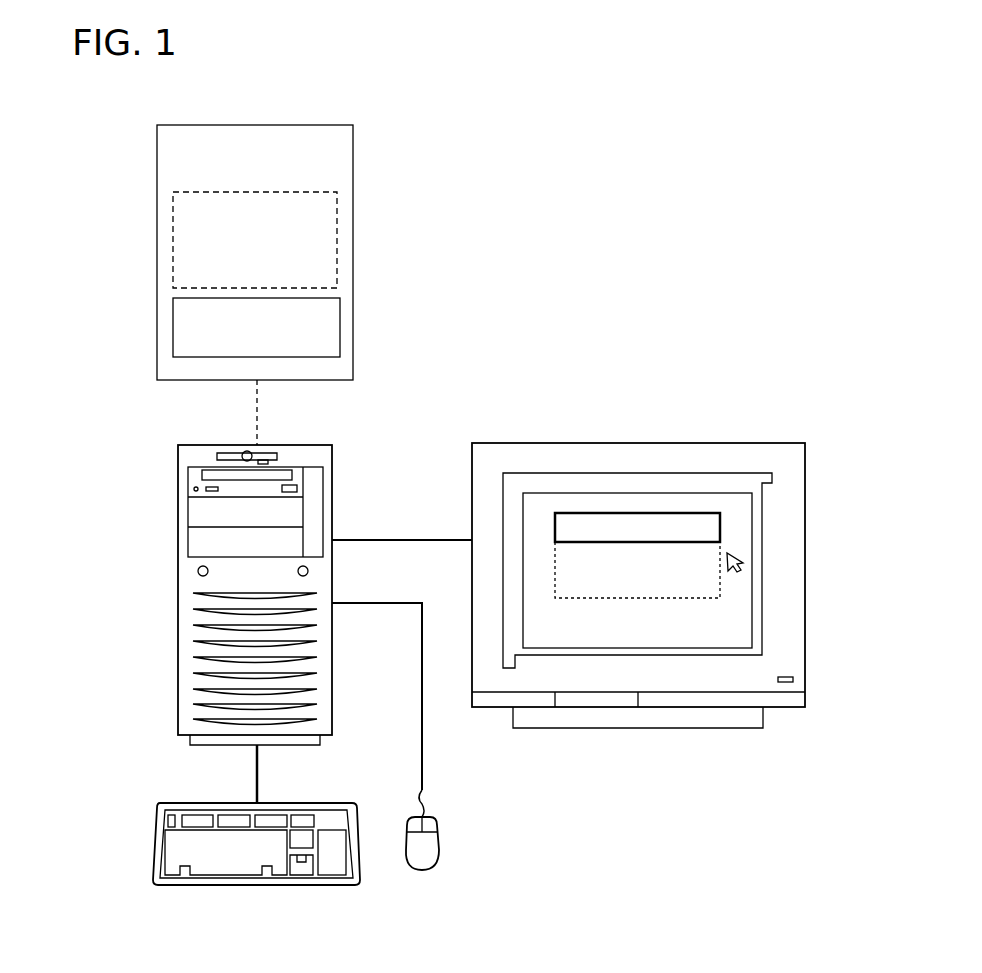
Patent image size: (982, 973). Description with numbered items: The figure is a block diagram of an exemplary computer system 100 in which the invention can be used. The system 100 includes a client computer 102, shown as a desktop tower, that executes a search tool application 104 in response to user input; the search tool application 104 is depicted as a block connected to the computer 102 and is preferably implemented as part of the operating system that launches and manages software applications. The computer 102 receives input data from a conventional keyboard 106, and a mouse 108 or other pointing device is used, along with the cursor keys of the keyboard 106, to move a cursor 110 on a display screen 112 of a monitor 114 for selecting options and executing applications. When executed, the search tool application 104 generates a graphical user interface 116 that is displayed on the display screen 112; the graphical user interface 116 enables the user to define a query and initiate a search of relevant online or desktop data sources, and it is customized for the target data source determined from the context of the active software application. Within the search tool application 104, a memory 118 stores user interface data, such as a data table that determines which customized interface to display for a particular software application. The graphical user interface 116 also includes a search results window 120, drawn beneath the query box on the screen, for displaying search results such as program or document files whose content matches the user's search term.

The computer system 100 is at (630, 214).
The client computer 102 is at (178, 595).
The search tool application 104 is at (157, 190).
The keyboard 106 is at (155, 848).
The mouse 108 is at (438, 832).
The cursor 110 is at (744, 567).
The display screen 112 is at (555, 508).
The monitor 114 is at (638, 443).
The graphical user interface 116 is at (337, 240).
The memory 118 is at (340, 329).
The search results window 120 is at (703, 590).